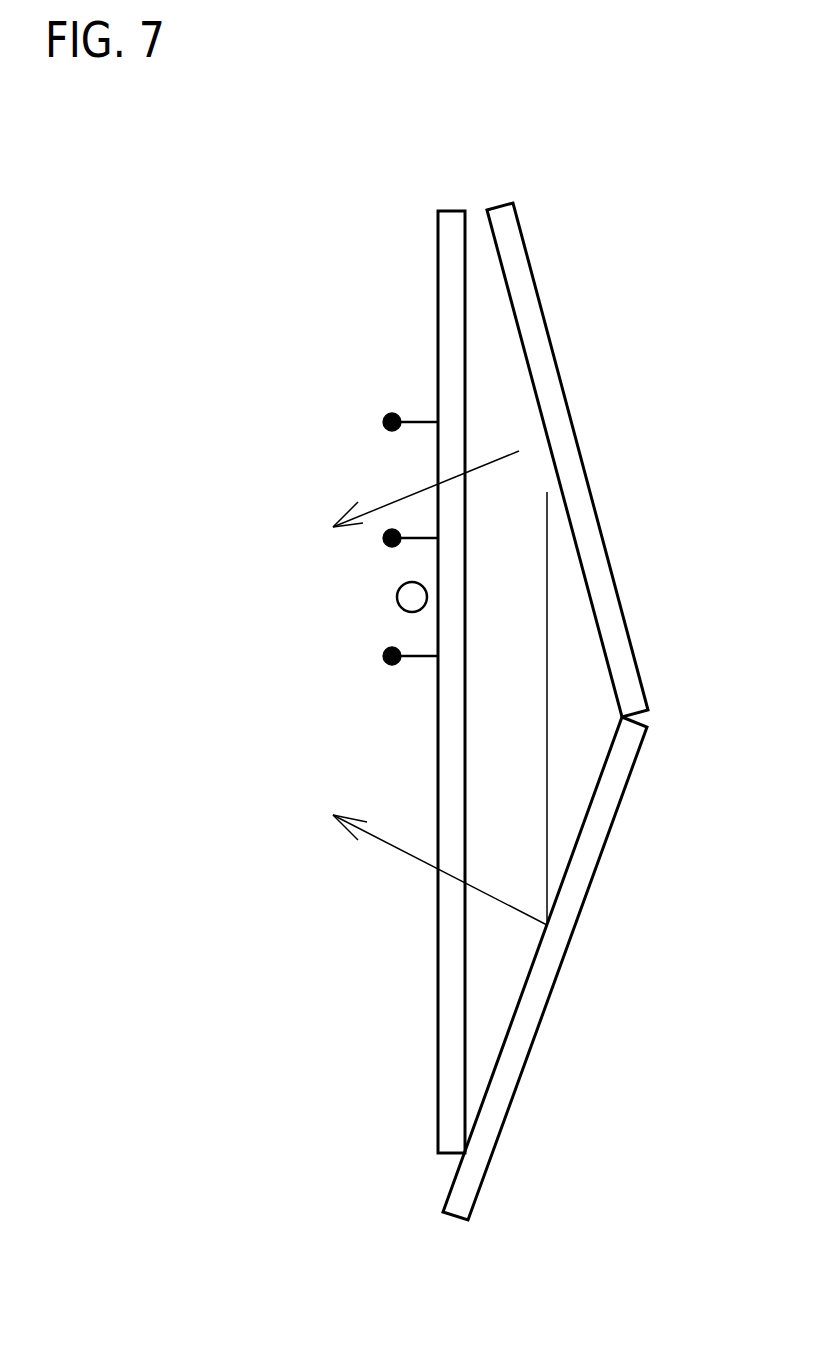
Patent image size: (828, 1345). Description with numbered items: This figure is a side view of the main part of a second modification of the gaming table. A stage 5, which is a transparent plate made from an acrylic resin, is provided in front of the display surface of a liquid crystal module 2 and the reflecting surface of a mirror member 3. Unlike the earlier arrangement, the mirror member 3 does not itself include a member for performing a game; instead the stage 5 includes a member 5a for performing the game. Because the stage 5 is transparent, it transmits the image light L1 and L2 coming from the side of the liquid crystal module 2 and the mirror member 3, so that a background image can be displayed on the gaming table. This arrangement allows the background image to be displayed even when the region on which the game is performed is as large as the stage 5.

The stage 5 is at (455, 215).
The member for performing the game 5a is at (418, 420).
The liquid crystal module 2 is at (570, 456).
The mirror member 3 is at (545, 1020).
The image light L1 is at (482, 464).
The image light L2 is at (498, 898).